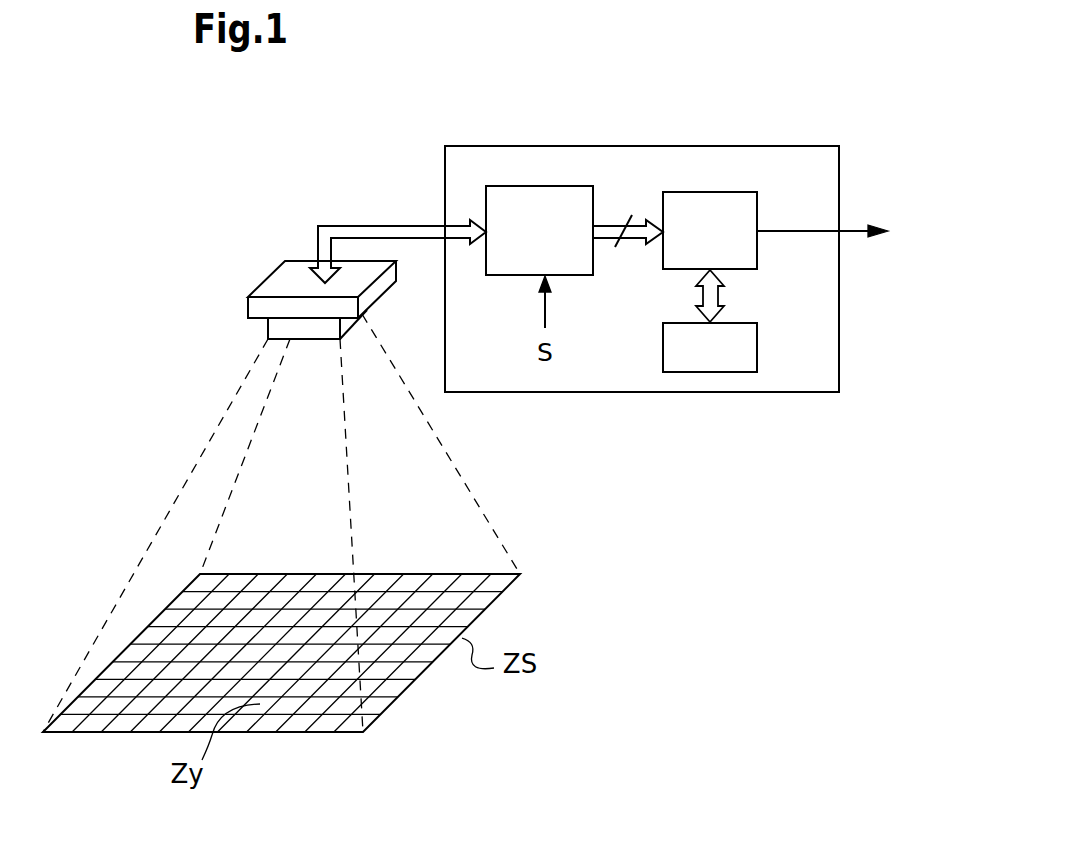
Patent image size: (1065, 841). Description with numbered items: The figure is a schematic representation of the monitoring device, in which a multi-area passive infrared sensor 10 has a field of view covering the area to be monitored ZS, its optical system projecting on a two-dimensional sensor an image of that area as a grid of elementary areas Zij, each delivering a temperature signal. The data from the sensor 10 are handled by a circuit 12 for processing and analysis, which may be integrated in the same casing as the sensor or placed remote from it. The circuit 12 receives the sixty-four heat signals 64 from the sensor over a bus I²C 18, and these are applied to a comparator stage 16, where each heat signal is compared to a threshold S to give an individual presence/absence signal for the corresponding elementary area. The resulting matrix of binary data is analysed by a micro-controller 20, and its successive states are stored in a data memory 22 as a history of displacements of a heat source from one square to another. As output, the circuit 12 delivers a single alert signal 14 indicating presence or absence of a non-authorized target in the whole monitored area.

The infrared sensor 10 is at (281, 285).
The circuit 12 is at (812, 146).
The alert signal 14 is at (860, 230).
The comparator stage 16 is at (518, 186).
The bus I²C 18 is at (357, 227).
The micro-controller 20 is at (705, 205).
The data memory 22 is at (757, 359).
The heat signals 64 is at (628, 215).